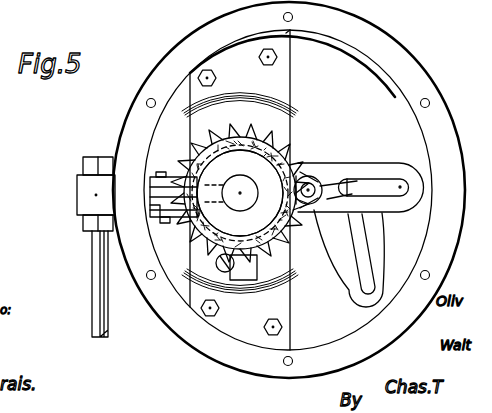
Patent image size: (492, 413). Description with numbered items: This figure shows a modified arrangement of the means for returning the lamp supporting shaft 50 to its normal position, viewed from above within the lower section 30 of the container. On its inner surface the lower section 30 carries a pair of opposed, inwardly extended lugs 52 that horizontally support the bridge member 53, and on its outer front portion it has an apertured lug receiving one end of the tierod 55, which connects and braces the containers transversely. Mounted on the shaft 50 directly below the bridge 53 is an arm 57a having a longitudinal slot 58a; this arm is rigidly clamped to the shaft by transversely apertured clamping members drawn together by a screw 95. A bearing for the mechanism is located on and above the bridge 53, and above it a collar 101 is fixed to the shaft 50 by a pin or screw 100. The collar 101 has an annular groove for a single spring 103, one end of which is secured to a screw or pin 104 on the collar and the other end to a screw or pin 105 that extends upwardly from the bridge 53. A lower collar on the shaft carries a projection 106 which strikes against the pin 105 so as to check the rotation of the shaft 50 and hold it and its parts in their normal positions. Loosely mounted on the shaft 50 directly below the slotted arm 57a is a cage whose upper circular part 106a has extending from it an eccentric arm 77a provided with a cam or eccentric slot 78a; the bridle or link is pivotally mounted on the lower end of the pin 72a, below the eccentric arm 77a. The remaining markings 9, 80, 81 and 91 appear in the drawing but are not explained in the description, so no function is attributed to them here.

The spindle axis dimension 9 is at (100, 197).
The lower section 30 is at (405, 133).
The shaft 50 is at (242, 190).
The lugs 52 is at (292, 40).
The bridge member 53 is at (289, 99).
The tierod 55 is at (93, 281).
The arm 57a is at (386, 165).
The longitudinal slot 58a is at (384, 248).
The pin 72a is at (323, 197).
The eccentric arm 77a is at (372, 262).
The eccentric slot 78a is at (426, 262).
The slot 80 is at (374, 180).
The pivot pin 81 is at (316, 181).
The key block 91 is at (151, 193).
The screw 95 is at (162, 218).
The pin or screw 100 is at (158, 173).
The collar 101 is at (188, 150).
The spring 103 is at (302, 140).
The screw or pin 104 is at (178, 163).
The screw or pin 105 is at (215, 266).
The projection 106 is at (250, 281).
The upper circular part 106a is at (303, 172).